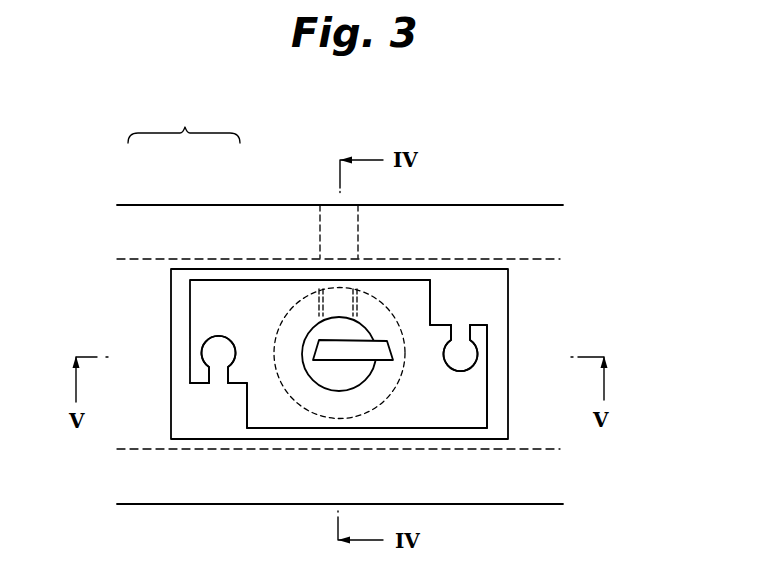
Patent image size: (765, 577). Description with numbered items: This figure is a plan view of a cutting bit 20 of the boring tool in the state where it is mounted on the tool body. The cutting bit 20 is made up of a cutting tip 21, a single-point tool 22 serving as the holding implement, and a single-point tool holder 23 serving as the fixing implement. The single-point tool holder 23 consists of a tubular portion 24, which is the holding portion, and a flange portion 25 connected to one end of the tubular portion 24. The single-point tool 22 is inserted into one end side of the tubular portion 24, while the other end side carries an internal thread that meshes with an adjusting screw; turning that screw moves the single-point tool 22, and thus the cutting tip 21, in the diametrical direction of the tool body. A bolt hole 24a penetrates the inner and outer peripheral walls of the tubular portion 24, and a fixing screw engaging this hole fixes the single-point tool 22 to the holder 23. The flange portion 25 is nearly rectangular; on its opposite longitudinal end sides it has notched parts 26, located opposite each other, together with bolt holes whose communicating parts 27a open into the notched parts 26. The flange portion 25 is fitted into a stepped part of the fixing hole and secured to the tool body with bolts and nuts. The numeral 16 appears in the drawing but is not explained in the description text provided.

The shaft 16 is at (323, 230).
The cutting bit 20 is at (533, 326).
The cutting tip 21 is at (378, 350).
The single-point tool 22 is at (318, 339).
The single-point tool holder 23 is at (184, 123).
The tubular portion 24 is at (280, 319).
The bolt hole 24a is at (352, 306).
The flange portion 25 is at (211, 275).
The notched part 26 is at (443, 322).
The communicating part 27a is at (461, 338).